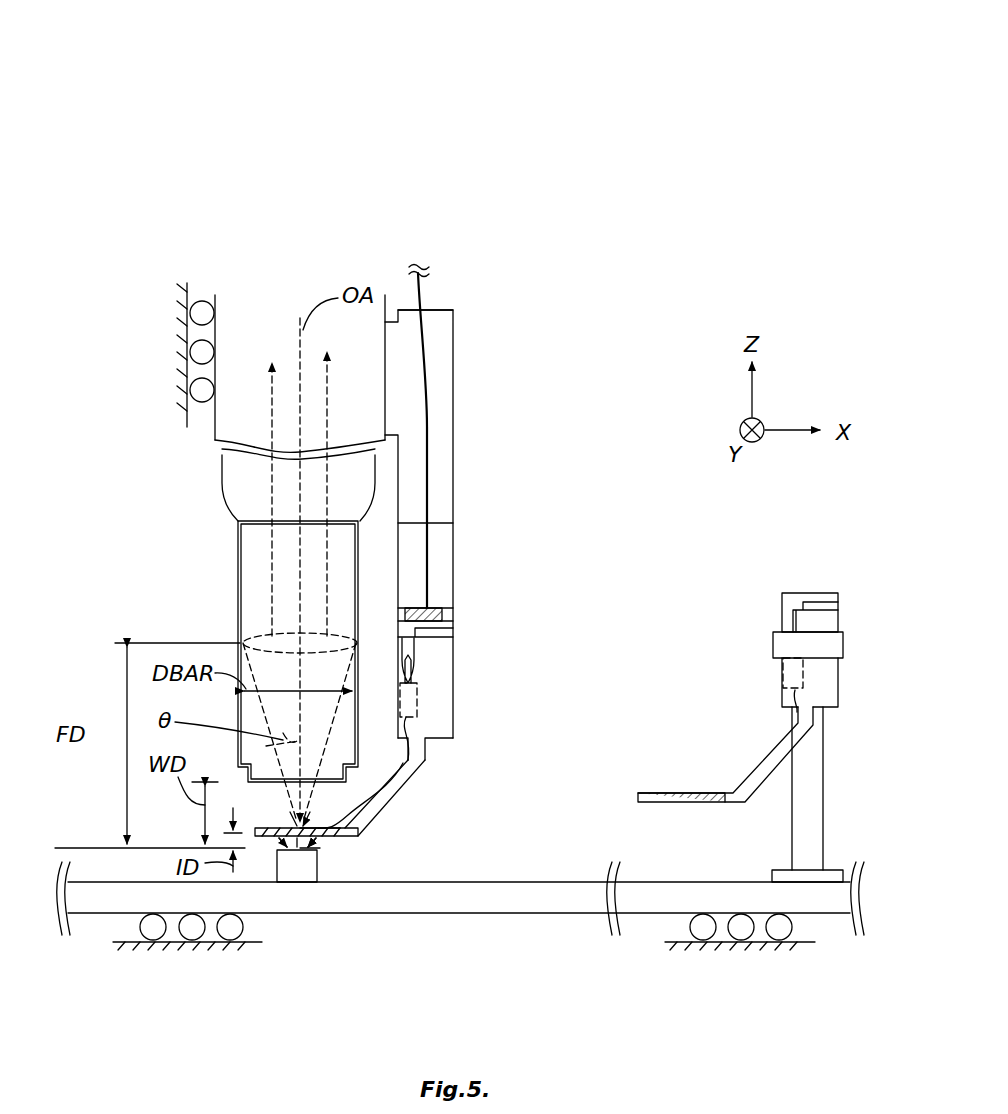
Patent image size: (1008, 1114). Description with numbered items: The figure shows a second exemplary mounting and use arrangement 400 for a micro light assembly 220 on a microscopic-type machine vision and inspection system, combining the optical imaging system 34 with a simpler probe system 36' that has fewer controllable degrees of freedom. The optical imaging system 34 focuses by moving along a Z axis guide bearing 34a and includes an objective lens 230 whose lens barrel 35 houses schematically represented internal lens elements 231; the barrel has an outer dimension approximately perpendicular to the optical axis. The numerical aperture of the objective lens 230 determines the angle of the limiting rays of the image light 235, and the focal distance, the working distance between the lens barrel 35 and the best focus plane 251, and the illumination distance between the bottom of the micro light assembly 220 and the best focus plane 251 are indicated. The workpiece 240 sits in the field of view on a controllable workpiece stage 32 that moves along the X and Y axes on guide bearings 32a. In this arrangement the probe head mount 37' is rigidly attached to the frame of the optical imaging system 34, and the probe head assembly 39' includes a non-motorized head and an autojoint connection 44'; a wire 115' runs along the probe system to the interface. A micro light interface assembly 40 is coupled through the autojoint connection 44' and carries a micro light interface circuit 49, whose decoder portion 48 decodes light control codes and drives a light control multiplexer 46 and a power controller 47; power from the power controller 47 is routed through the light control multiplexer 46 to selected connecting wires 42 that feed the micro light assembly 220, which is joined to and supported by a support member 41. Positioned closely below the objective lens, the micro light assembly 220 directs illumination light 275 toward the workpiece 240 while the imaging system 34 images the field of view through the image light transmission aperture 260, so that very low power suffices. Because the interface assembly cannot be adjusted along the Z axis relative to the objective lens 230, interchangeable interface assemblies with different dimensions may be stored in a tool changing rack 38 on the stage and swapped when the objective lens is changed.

The mounting and use arrangement 400 is at (143, 58).
The optical imaging system 34 is at (209, 432).
The Z axis guide bearing 34a is at (200, 298).
The image light 235 is at (270, 412).
The lens barrel 35 is at (238, 548).
The objective lens 230 is at (234, 575).
The internal lens elements 231 is at (238, 643).
The best focus plane 251 is at (68, 846).
The image light transmission aperture 260 is at (296, 826).
The micro light assembly 220 is at (315, 838).
The illumination light 275 is at (322, 850).
The workpiece 240 is at (300, 873).
The workpiece stage 32 is at (475, 914).
The guide bearings 32a is at (122, 927).
The probe head mount 37' is at (454, 524).
The probe head assembly 39' is at (461, 536).
The probe system 36' is at (514, 357).
The wire 115' is at (467, 437).
The autojoint connection 44' is at (455, 600).
The decoder portion 48 is at (445, 633).
The light control multiplexer 46 is at (413, 685).
The power controller 47 is at (410, 695).
The micro light interface circuit 49 is at (553, 652).
The micro light interface assembly 40 is at (457, 718).
The connecting wires 42 is at (415, 768).
The support member 41 is at (383, 810).
The tool changing rack 38 is at (843, 643).